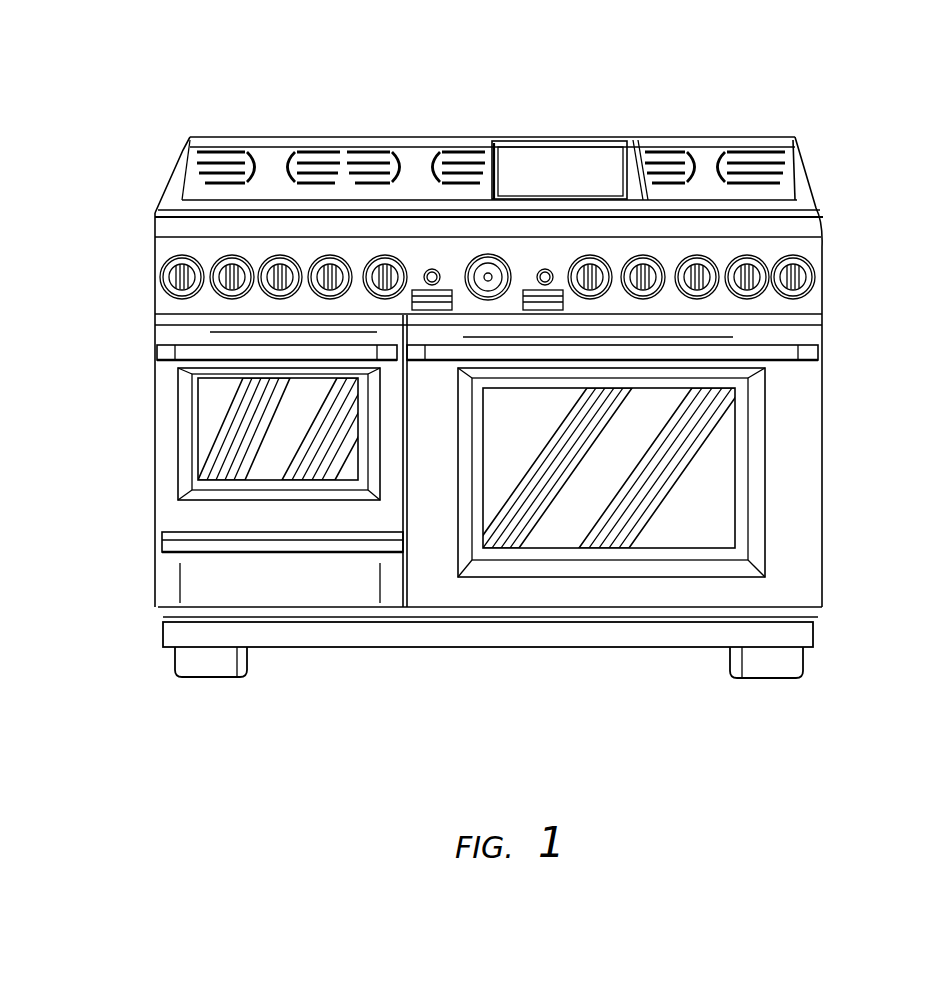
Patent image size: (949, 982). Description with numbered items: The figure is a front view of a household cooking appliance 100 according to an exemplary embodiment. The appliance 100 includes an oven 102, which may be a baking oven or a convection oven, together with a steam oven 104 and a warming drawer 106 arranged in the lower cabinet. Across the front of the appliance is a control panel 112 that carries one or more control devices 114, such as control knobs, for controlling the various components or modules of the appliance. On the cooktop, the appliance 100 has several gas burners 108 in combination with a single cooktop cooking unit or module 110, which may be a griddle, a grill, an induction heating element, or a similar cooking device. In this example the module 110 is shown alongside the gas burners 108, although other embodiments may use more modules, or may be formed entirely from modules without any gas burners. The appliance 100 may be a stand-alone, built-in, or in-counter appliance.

The household cooking appliance 100 is at (811, 724).
The oven 102 is at (790, 472).
The steam oven 104 is at (168, 398).
The warming drawer 106 is at (171, 591).
The gas burner 108 is at (231, 153).
The cooktop cooking module 110 is at (541, 163).
The control panel 112 is at (818, 250).
The control device 114 is at (812, 283).